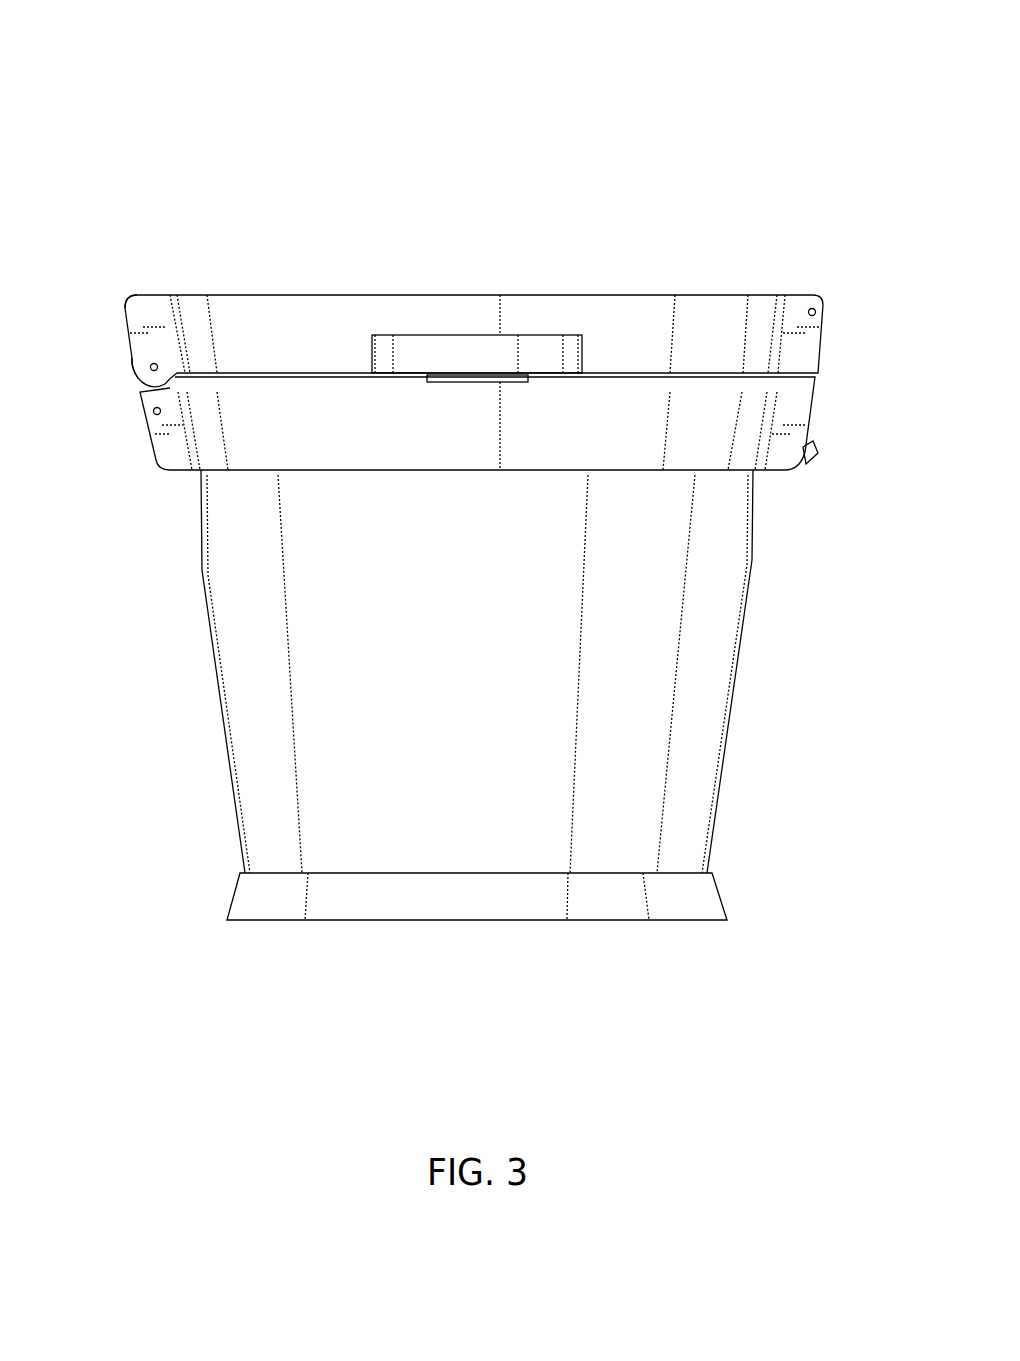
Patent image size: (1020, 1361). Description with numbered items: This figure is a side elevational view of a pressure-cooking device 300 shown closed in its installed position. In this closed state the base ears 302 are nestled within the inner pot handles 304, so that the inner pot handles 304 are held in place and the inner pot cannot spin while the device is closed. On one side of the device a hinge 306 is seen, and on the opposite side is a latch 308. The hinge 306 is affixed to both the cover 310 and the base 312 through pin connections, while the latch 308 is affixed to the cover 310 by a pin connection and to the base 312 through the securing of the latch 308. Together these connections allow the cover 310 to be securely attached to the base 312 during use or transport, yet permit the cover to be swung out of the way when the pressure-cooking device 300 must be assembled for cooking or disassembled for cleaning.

The pressure-cooking device 300 is at (141, 69).
The base ears 302 is at (455, 382).
The inner pot handles 304 is at (410, 333).
The hinge 306 is at (117, 357).
The latch 308 is at (838, 330).
The cover 310 is at (125, 297).
The base 312 is at (188, 641).